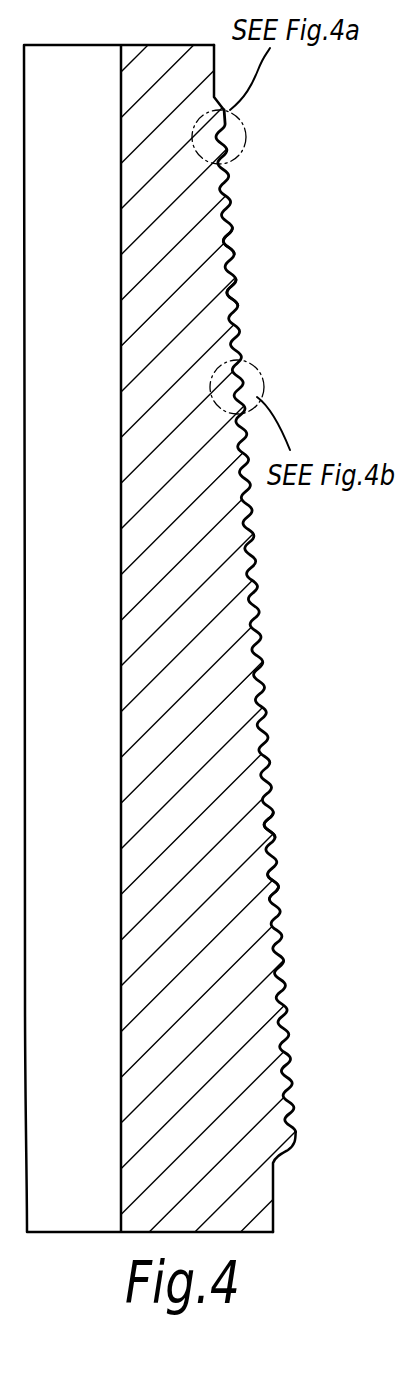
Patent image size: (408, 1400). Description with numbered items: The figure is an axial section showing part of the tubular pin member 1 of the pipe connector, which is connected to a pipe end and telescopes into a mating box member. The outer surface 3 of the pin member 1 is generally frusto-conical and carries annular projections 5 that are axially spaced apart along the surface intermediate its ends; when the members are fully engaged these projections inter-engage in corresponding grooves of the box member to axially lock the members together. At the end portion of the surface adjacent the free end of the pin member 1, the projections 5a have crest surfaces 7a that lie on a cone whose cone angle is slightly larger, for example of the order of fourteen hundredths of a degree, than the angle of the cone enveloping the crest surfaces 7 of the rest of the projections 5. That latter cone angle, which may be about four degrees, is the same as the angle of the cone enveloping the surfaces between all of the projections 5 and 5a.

The tubular pin member 1 is at (147, 895).
The outer surface 3 is at (280, 687).
The annular projections 5 is at (272, 815).
The crest surfaces 7 is at (277, 878).
The projections at the end portion 5a is at (232, 288).
The crest surfaces of the end projections 7a is at (233, 232).